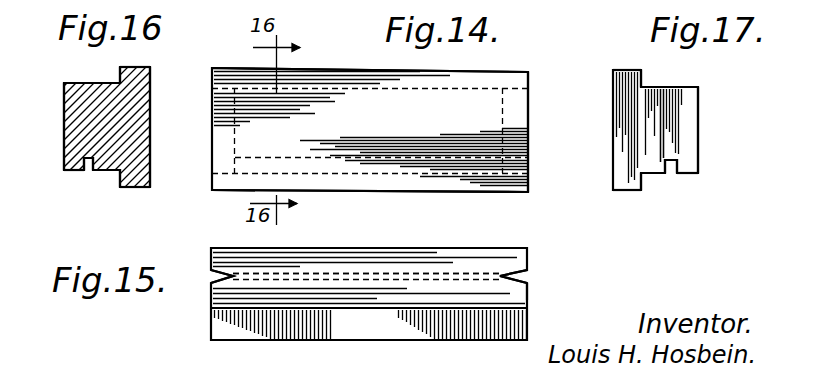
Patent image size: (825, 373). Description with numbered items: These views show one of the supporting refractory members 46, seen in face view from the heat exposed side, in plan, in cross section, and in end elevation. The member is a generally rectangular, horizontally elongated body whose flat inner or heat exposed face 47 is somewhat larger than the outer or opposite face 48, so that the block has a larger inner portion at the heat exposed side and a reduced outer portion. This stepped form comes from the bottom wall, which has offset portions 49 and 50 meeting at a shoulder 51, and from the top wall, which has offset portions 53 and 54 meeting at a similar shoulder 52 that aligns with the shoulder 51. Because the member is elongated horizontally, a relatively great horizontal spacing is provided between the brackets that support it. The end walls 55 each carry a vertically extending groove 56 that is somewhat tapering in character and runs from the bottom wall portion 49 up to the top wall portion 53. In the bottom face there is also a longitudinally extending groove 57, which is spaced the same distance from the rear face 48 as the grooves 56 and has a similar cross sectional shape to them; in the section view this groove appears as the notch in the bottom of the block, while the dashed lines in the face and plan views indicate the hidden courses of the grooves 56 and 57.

In FIG. 16, the supporting refractory member 46 is at (92, 110).
In FIG. 14, the supporting refractory member 46 is at (390, 130).
In FIG. 16, the inner or heat exposed face 47 is at (150, 112).
In FIG. 14, the inner or heat exposed face 47 is at (559, 132).
In FIG. 17, the inner or heat exposed face 47 is at (612, 115).
In FIG. 15, the inner or heat exposed face 47 is at (330, 340).
In FIG. 16, the outer or opposite face 48 is at (64, 128).
In FIG. 17, the outer or opposite face 48 is at (697, 127).
In FIG. 15, the outer or opposite face 48 is at (385, 250).
In FIG. 16, the bottom wall portion 49 is at (96, 172).
In FIG. 17, the bottom wall portion 49 is at (658, 173).
In FIG. 16, the bottom wall portion 50 is at (135, 187).
In FIG. 14, the bottom wall portion 50 is at (392, 190).
In FIG. 17, the bottom wall portion 50 is at (625, 190).
In FIG. 16, the shoulder 51 is at (120, 174).
In FIG. 17, the shoulder 51 is at (643, 178).
In FIG. 16, the shoulder 52 is at (120, 80).
In FIG. 17, the shoulder 52 is at (641, 85).
In FIG. 15, the shoulder 52 is at (527, 300).
In FIG. 16, the top wall portion 53 is at (80, 83).
In FIG. 17, the top wall portion 53 is at (690, 87).
In FIG. 16, the top wall portion 54 is at (137, 68).
In FIG. 14, the top wall portion 54 is at (462, 68).
In FIG. 17, the top wall portion 54 is at (625, 70).
In FIG. 14, the end wall 55 is at (528, 122).
In FIG. 15, the end wall 55 is at (211, 298).
In FIG. 14, the vertically extending groove 56 is at (505, 105).
In FIG. 17, the vertically extending groove 56 is at (672, 113).
In FIG. 15, the vertically extending groove 56 is at (212, 275).
In FIG. 16, the longitudinally extending groove 57 is at (85, 172).
In FIG. 17, the longitudinally extending groove 57 is at (677, 172).
In FIG. 15, the longitudinally extending groove 57 is at (335, 262).